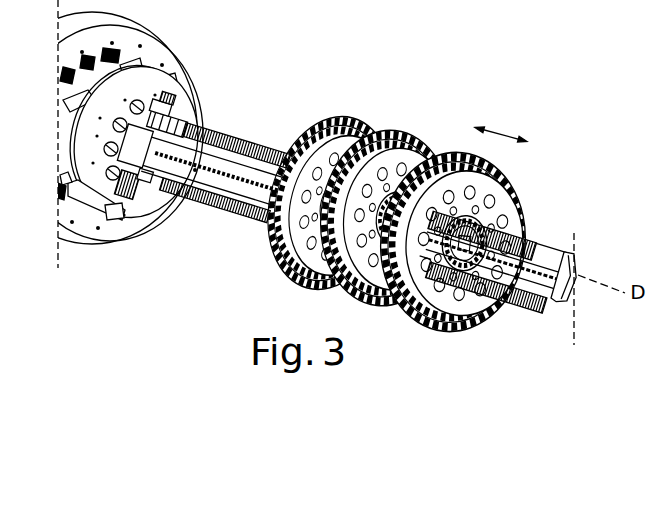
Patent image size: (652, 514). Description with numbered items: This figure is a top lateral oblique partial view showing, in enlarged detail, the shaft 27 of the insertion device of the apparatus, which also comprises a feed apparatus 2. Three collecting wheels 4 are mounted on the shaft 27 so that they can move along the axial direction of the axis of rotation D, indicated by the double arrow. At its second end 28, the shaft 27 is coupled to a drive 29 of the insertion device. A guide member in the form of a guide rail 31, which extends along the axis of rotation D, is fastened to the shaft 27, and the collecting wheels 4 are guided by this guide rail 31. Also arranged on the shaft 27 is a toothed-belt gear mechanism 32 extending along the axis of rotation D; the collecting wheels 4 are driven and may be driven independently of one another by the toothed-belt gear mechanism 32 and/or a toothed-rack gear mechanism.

The feed apparatus 2 is at (308, 191).
The collecting wheel 4 is at (359, 118).
The shaft 27 is at (165, 168).
The second end 28 is at (203, 84).
The drive 29 is at (68, 172).
The guide rail 31 is at (555, 264).
The toothed-belt gear mechanism 32 is at (540, 233).